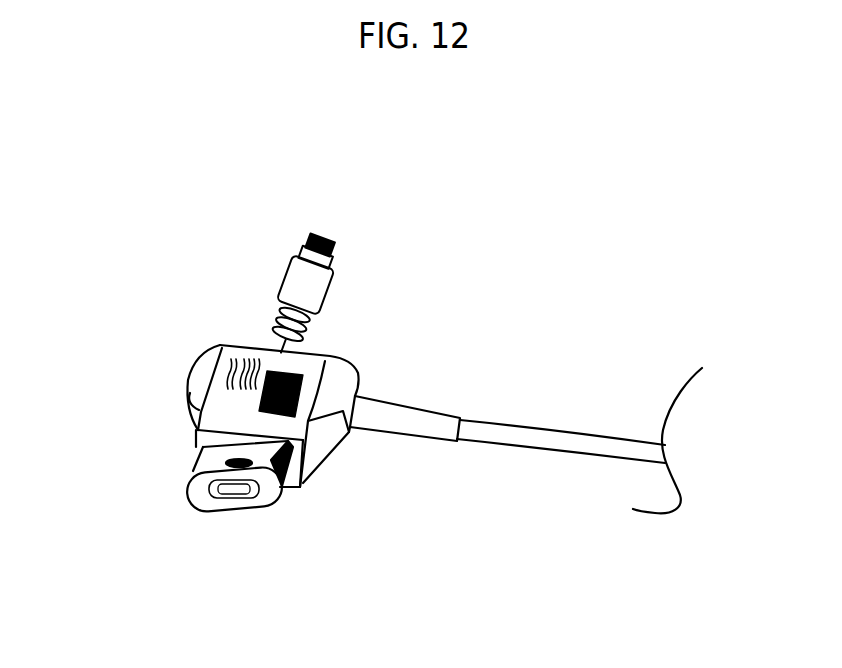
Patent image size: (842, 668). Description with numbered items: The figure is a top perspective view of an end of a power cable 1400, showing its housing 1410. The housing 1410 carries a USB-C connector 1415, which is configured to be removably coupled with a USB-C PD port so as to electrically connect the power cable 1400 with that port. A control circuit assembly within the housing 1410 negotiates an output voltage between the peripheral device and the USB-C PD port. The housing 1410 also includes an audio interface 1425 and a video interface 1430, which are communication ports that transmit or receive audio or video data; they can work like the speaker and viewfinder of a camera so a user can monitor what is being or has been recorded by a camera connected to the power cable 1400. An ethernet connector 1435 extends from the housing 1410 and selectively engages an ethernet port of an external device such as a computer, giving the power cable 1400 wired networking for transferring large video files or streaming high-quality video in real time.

The power cable 1400 is at (484, 306).
The housing 1410 is at (190, 380).
The USB-C connector 1415 is at (250, 482).
The audio interface 1425 is at (233, 357).
The video interface 1430 is at (300, 378).
The ethernet connector 1435 is at (335, 260).